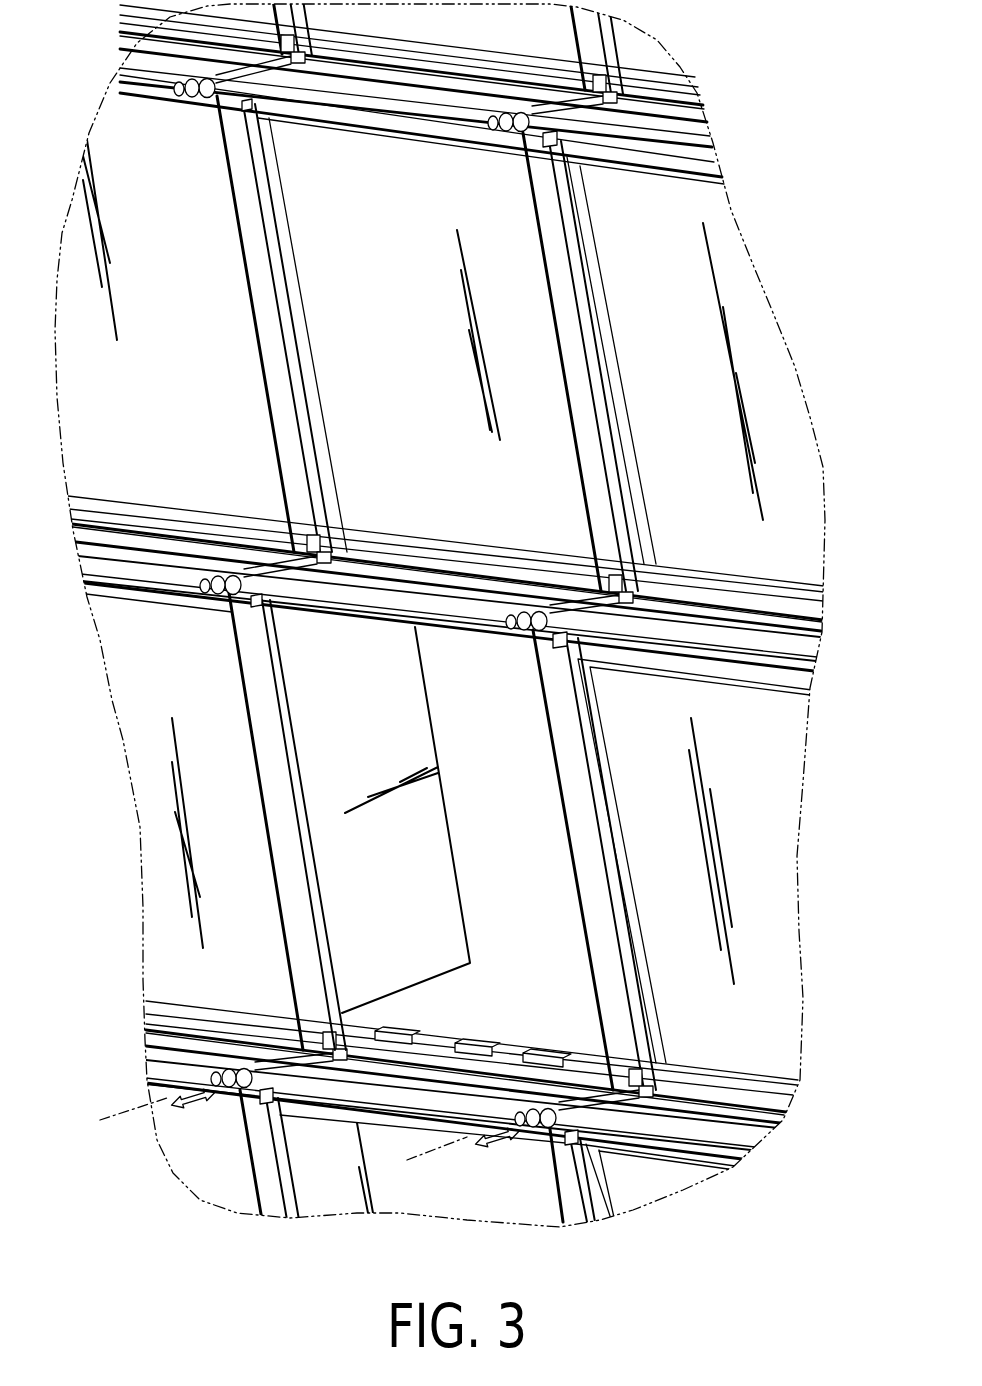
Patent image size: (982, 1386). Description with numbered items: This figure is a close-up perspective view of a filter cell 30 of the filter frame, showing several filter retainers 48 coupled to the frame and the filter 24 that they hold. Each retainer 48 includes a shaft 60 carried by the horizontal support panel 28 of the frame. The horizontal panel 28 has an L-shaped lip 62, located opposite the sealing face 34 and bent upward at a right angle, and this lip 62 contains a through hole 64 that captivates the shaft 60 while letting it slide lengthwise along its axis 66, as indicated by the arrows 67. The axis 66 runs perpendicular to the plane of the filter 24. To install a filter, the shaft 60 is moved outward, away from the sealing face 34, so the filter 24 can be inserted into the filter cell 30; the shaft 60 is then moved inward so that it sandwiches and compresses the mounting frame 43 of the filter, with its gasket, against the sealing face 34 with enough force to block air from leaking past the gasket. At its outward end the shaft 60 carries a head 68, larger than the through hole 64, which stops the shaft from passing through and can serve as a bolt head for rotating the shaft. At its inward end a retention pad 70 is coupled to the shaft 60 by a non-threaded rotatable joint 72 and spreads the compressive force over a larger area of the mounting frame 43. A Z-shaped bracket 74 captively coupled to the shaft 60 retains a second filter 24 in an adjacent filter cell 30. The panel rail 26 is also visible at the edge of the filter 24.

The filter 24 is at (410, 315).
The panel rail 26 is at (272, 406).
The horizontal support panel 28 is at (461, 594).
The filter cell 30 is at (523, 832).
The sealing face 34 is at (280, 666).
The mounting frame 43 is at (364, 122).
The filter retainer 48 is at (204, 94).
The shaft 60 is at (604, 604).
The L-shaped lip 62 is at (433, 607).
The through hole 64 is at (541, 630).
The axis 66 is at (443, 1147).
The arrows 67 is at (503, 1137).
The head 68 is at (518, 616).
The retention pad 70 is at (330, 552).
The non-threaded rotatable joint 72 is at (310, 540).
The bracket 74 is at (557, 637).